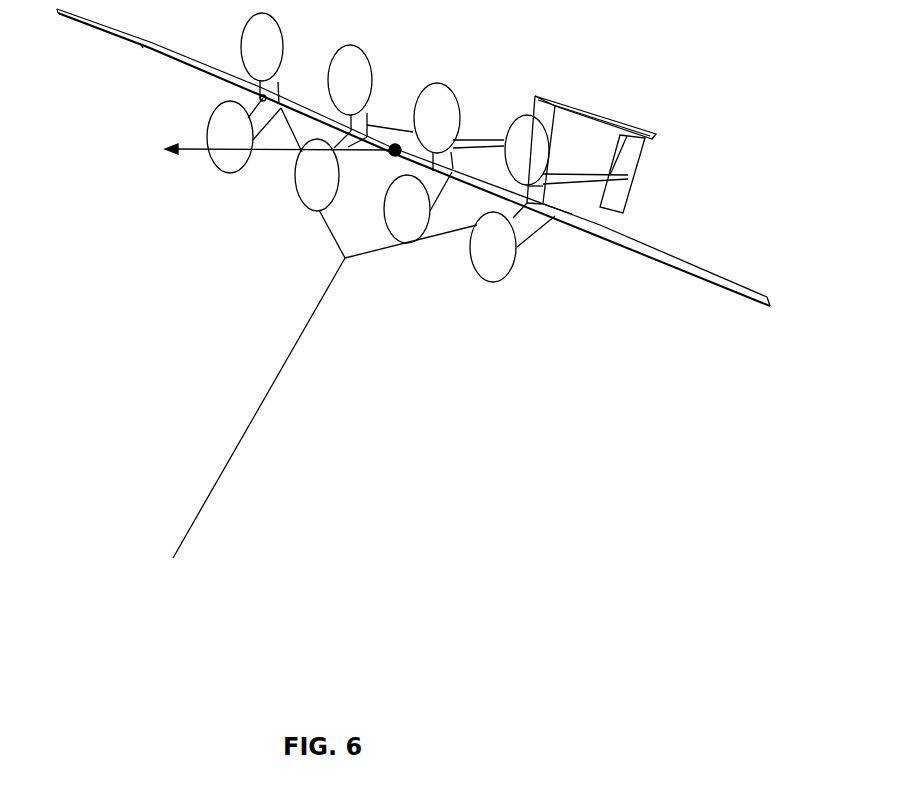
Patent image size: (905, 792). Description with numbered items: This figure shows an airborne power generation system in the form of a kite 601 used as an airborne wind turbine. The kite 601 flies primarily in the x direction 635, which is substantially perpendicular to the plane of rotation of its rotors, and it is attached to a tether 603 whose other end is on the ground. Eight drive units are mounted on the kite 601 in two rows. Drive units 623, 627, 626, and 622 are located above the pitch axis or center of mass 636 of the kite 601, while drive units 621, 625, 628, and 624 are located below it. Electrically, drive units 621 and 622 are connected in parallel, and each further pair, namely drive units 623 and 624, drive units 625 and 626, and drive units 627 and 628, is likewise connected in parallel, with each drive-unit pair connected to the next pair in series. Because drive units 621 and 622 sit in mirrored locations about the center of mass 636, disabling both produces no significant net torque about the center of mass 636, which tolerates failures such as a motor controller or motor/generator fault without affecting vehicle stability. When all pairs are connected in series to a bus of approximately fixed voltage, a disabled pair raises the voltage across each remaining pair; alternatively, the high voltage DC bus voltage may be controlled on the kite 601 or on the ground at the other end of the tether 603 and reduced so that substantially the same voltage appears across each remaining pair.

The kite 601 is at (603, 240).
The tether 603 is at (303, 348).
The drive unit 621 is at (230, 137).
The drive unit 622 is at (527, 150).
The drive unit 623 is at (262, 47).
The drive unit 624 is at (493, 247).
The drive unit 625 is at (317, 175).
The drive unit 626 is at (437, 118).
The drive unit 627 is at (350, 80).
The drive unit 628 is at (407, 209).
The x direction 635 is at (192, 152).
The center of mass 636 is at (397, 140).